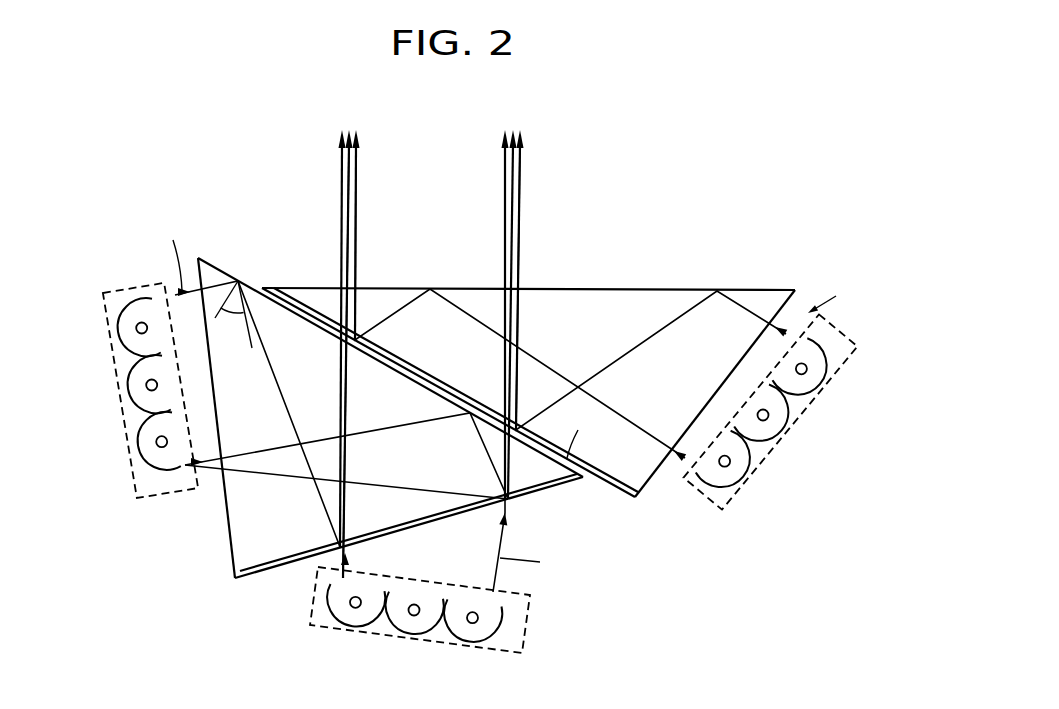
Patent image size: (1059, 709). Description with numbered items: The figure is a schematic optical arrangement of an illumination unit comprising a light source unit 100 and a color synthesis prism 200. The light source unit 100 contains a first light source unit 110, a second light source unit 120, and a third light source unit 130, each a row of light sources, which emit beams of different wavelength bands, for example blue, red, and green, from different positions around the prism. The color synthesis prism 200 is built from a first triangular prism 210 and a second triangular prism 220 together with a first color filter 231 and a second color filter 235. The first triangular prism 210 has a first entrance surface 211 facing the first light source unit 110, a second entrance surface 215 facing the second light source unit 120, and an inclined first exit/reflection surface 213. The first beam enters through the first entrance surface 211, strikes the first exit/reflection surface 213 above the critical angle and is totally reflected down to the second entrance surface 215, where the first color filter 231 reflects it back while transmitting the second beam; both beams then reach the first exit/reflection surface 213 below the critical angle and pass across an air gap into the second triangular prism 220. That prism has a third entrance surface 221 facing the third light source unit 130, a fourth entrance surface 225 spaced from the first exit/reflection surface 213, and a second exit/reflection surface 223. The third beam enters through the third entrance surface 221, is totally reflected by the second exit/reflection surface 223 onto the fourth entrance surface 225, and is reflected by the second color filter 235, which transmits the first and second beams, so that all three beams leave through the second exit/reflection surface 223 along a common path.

The light source unit 100 is at (134, 260).
The first light source unit 110 is at (135, 470).
The second light source unit 120 is at (320, 630).
The third light source unit 130 is at (722, 510).
The color synthesis prism 200 is at (737, 250).
The first triangular prism 210 is at (226, 247).
The first entrance surface 211 is at (224, 522).
The first exit/reflection surface 213 is at (258, 291).
The second entrance surface 215 is at (252, 580).
The second triangular prism 220 is at (618, 264).
The third entrance surface 221 is at (792, 304).
The second exit/reflection surface 223 is at (668, 289).
The fourth entrance surface 225 is at (620, 490).
The first color filter 231 is at (560, 488).
The second color filter 235 is at (605, 483).